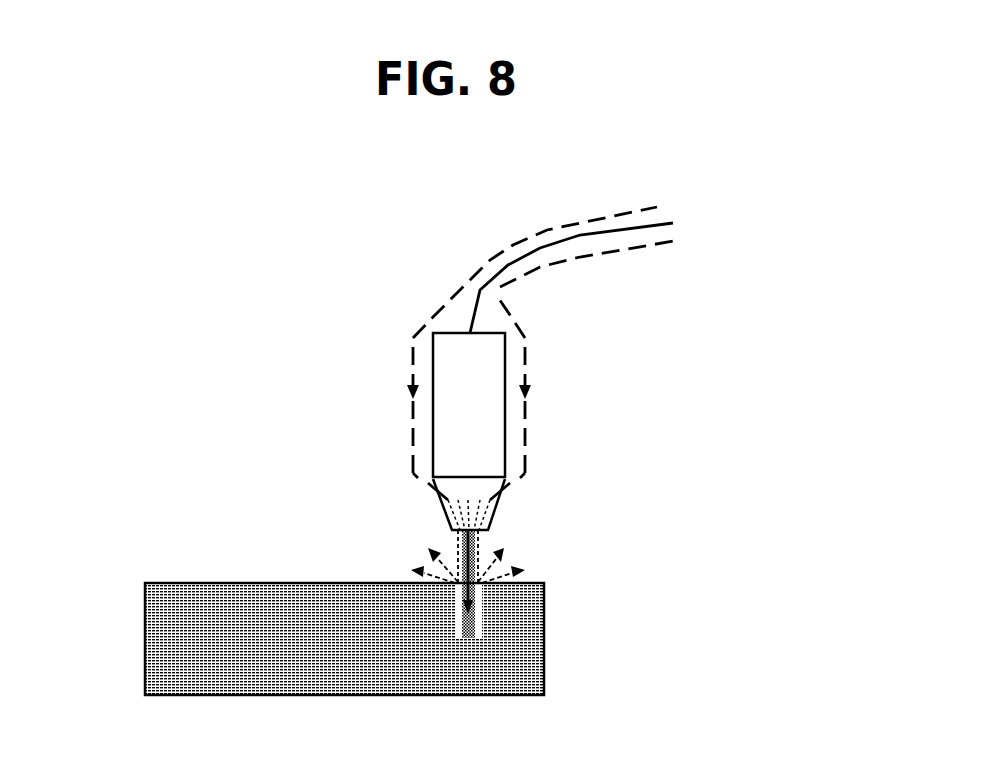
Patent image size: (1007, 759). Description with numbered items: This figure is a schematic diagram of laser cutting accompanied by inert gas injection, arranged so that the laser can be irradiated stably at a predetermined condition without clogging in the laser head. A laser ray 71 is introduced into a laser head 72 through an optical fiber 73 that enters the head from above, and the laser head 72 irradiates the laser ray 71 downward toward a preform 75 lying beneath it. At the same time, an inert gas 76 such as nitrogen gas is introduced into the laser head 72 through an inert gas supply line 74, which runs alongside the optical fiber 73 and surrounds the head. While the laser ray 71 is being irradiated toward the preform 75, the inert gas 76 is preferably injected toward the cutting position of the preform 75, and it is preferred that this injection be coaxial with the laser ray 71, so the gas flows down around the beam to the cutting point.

The laser ray 71 is at (473, 544).
The laser head 72 is at (485, 402).
The optical fiber 73 is at (673, 223).
The inert gas supply line 74 is at (587, 230).
The preform 75 is at (522, 615).
The inert gas 76 is at (460, 553).